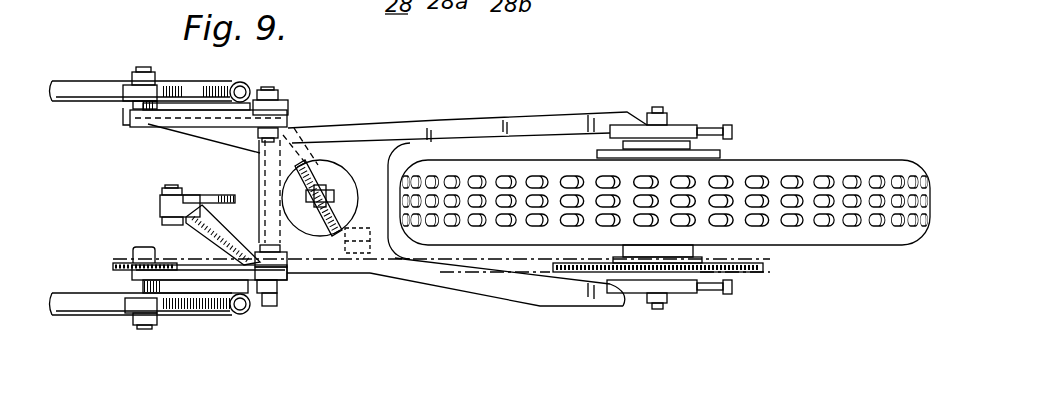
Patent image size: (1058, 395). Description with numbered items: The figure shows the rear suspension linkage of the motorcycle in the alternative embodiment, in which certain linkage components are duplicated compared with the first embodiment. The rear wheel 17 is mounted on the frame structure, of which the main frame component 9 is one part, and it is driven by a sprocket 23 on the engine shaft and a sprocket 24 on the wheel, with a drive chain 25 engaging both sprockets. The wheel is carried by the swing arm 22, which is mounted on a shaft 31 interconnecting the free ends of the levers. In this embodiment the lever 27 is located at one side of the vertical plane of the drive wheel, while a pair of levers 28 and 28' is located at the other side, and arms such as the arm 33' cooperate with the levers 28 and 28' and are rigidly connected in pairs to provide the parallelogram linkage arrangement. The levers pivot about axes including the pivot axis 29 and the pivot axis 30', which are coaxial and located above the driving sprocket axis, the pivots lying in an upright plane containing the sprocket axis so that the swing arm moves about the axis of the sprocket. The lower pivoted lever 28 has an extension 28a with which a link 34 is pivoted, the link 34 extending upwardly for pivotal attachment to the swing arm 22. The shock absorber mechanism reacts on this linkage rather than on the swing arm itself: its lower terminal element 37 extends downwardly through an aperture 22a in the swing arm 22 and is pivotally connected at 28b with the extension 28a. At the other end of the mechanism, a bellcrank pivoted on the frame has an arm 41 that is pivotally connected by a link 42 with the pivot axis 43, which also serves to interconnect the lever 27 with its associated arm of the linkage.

The main frame component 9 is at (100, 316).
The rear wheel 17 is at (787, 163).
The swing arm 22 is at (497, 120).
The aperture 22a is at (315, 233).
The sprocket 23 is at (118, 260).
The sprocket 24 is at (765, 275).
The drive chain 25 is at (477, 278).
The lever 27 is at (202, 281).
The lever 28 is at (169, 78).
The lever 28' is at (202, 131).
The extension 28a is at (305, 167).
The pivotal connection 28b is at (327, 183).
The pivot axis 29 is at (147, 328).
The pivot axis 30' is at (150, 116).
The shaft 31 is at (275, 312).
The arm 33' is at (294, 99).
The link 34 is at (348, 256).
The lower terminal element 37 is at (333, 175).
The bellcrank arm 41 is at (198, 196).
The link 42 is at (200, 230).
The pivot axis 43 is at (265, 308).